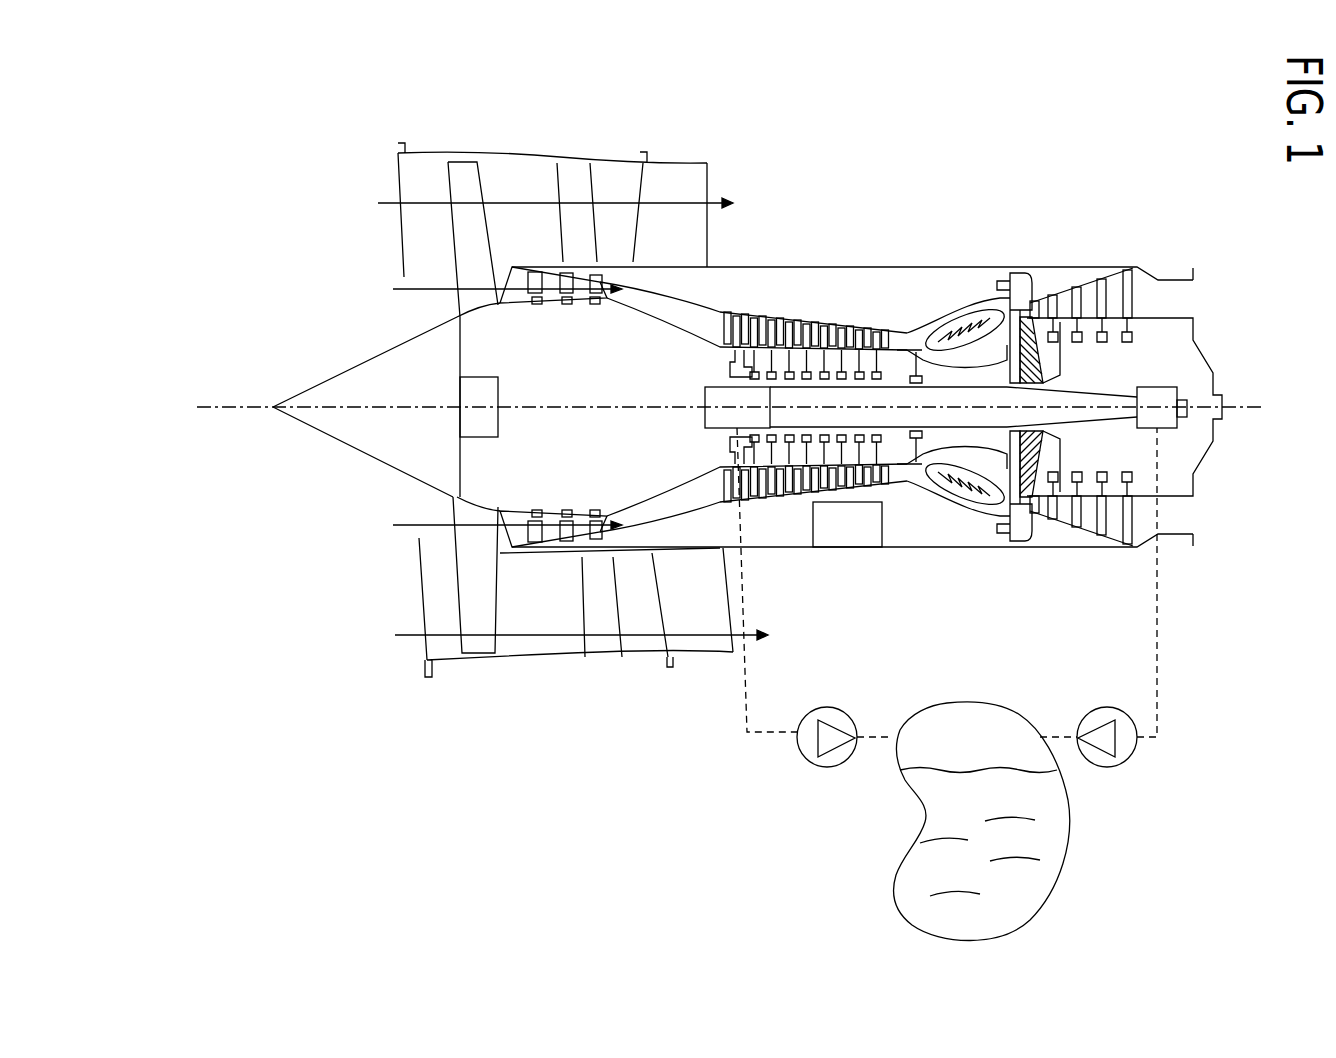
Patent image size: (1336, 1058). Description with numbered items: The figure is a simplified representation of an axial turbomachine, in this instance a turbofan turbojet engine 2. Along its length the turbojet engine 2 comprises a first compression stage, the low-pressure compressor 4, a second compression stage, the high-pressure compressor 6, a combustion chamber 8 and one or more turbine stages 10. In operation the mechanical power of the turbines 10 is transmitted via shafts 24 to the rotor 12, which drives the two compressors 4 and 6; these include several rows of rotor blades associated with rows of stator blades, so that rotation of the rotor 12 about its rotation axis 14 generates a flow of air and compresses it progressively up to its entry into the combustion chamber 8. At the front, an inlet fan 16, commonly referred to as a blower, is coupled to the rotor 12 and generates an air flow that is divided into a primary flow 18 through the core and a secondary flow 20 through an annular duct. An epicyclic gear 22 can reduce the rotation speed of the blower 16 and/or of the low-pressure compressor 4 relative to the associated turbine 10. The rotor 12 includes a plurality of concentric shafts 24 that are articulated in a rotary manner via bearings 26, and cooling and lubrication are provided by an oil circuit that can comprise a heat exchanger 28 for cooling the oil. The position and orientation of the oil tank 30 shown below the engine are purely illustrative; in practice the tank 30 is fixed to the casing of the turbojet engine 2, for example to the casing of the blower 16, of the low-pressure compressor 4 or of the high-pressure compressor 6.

The turbojet engine 2 is at (167, 387).
The low-pressure compressor 4 is at (533, 305).
The high-pressure compressor 6 is at (796, 340).
The combustion chamber 8 is at (977, 316).
The turbine stages 10 is at (1107, 267).
The rotor 12 is at (1060, 393).
The rotation axis 14 is at (606, 406).
The inlet fan 16 is at (470, 230).
The primary flow 18 is at (491, 408).
The secondary flow 20 is at (559, 414).
The epicyclic gear 22 is at (486, 425).
The shafts 24 is at (903, 400).
The bearings 26 is at (1155, 397).
The heat exchanger 28 is at (858, 535).
The tank 30 is at (1033, 878).